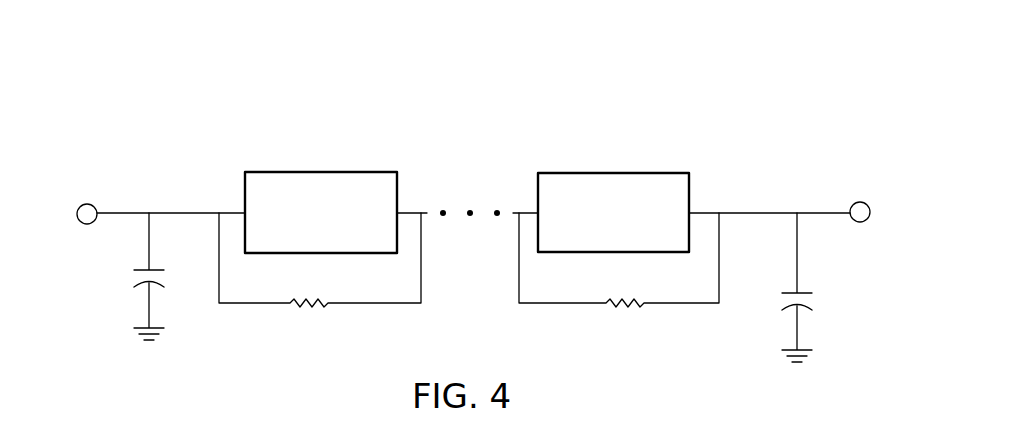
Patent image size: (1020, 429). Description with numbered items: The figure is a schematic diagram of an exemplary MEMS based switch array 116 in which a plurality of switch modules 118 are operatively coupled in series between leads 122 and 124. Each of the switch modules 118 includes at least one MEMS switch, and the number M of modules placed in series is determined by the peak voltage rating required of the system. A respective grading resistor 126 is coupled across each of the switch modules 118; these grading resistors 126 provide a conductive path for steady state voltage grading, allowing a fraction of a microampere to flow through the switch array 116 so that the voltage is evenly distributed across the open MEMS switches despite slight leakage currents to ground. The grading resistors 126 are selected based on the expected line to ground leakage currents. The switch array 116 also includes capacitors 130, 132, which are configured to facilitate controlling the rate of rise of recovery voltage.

The MEMS based switch array 116 is at (767, 68).
The switch module 118 is at (320, 172).
The lead 122 is at (84, 204).
The lead 124 is at (855, 202).
The grading resistor 126 is at (324, 304).
The capacitor 130 is at (143, 284).
The capacitor 132 is at (793, 304).